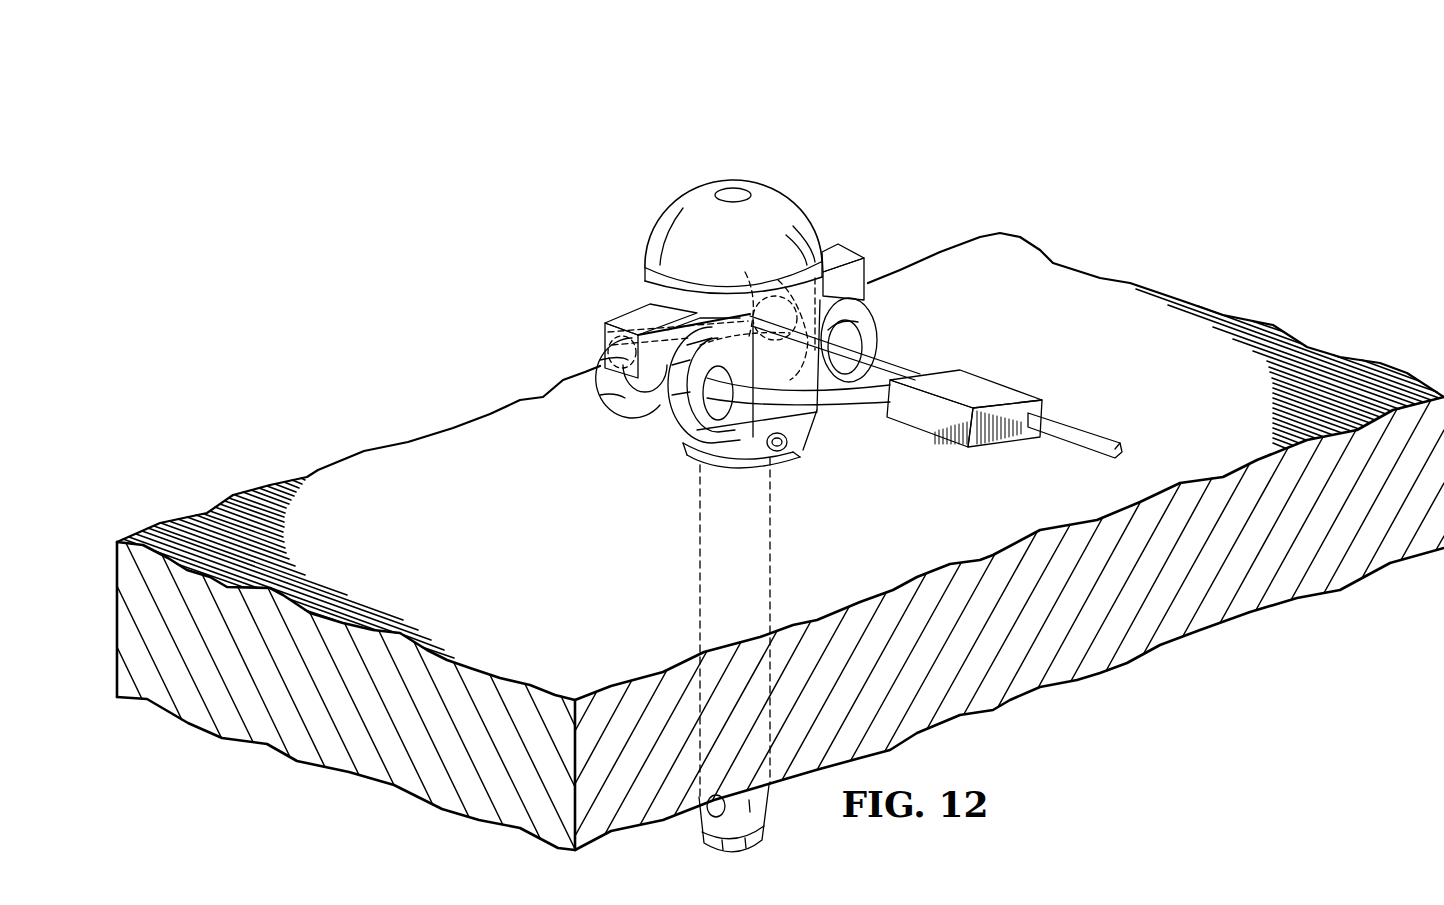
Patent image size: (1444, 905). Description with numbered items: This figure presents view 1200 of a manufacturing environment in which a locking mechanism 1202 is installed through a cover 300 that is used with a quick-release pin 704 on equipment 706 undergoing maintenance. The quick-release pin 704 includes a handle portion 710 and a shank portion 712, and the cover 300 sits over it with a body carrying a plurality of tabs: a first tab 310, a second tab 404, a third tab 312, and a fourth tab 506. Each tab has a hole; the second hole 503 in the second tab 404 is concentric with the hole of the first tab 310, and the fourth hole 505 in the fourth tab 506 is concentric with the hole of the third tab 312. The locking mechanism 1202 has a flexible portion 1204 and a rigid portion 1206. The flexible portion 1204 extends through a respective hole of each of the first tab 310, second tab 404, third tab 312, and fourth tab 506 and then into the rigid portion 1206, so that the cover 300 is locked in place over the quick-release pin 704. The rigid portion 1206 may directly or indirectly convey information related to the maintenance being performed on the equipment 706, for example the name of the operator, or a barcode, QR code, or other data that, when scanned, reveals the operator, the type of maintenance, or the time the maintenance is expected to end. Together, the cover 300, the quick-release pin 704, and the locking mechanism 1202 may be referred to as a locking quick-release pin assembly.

The view 1200 is at (575, 101).
The locking mechanism 1202 is at (932, 468).
The equipment 706 is at (1052, 265).
The cover 300 is at (696, 187).
The fourth hole 505 is at (745, 272).
The fourth tab 506 is at (778, 280).
The handle portion 710 is at (846, 248).
The quick-release pin 704 is at (611, 312).
The second tab 404 is at (592, 405).
The second hole 503 is at (651, 425).
The first tab 310 is at (722, 465).
The third tab 312 is at (879, 326).
The shank portion 712 is at (697, 560).
The rigid portion 1206 is at (985, 386).
The flexible portion 1204 is at (1080, 423).